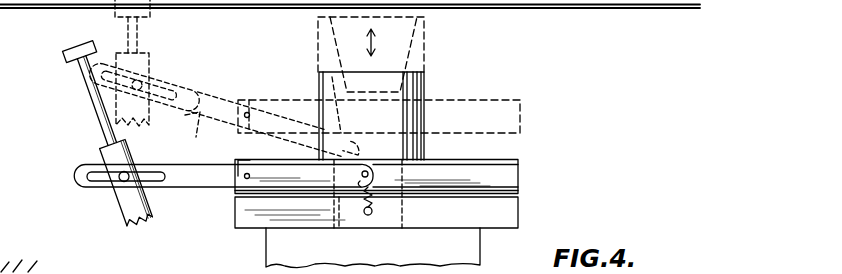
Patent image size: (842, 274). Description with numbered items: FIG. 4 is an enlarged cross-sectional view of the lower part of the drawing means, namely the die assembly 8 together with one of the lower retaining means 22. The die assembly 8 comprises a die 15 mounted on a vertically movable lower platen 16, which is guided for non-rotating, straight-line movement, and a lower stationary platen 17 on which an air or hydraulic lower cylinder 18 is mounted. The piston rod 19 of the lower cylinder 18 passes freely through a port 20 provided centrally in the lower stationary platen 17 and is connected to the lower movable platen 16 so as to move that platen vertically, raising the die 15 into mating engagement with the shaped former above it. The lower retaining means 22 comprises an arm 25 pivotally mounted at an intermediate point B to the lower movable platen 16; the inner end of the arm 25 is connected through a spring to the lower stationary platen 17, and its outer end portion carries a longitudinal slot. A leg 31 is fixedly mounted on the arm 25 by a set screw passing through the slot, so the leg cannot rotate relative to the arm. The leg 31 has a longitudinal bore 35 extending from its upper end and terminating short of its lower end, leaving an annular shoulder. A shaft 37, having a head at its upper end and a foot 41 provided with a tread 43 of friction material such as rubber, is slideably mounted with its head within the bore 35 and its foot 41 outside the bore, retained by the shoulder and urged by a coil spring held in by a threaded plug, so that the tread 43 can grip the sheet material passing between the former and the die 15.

The die assembly 8 is at (308, 90).
The die 15 is at (376, 125).
The lower movable platen 16 is at (521, 117).
The lower stationary platen 17 is at (518, 214).
The lower cylinder 18 is at (462, 253).
The piston rod 19 is at (388, 197).
The port 20 is at (334, 214).
The lower retaining means 22 is at (63, 173).
The arm 25 is at (194, 176).
The leg 31 is at (100, 150).
The longitudinal bore 35 is at (131, 216).
The shaft 37 is at (101, 112).
The foot 41 is at (144, 18).
The tread 43 is at (75, 46).
The intermediate pivot point B is at (249, 108).